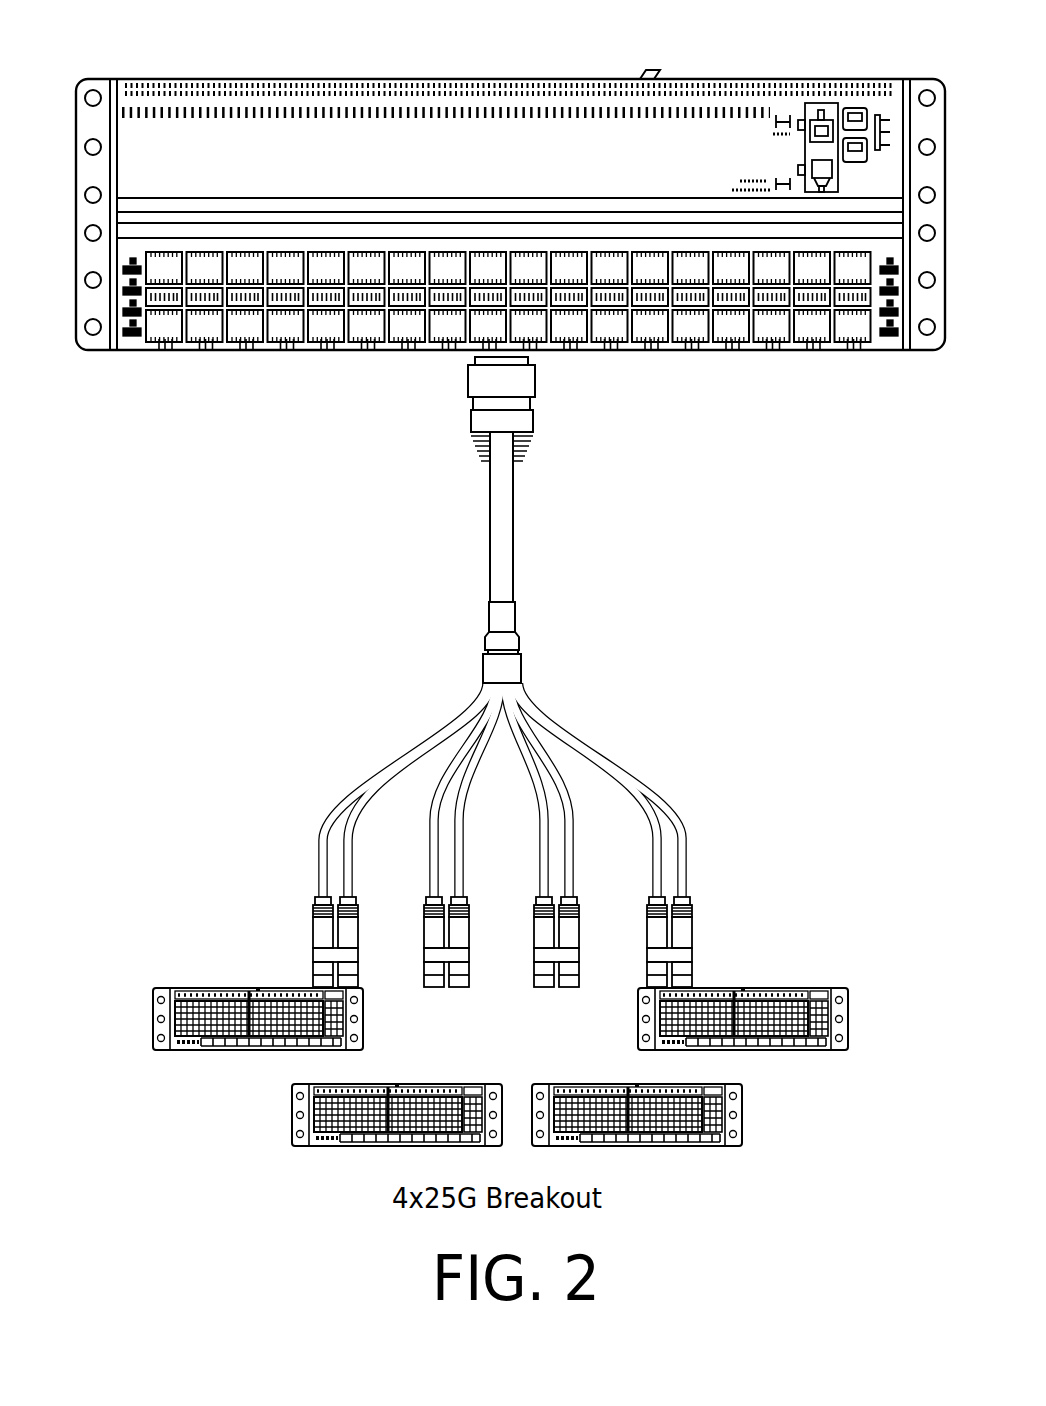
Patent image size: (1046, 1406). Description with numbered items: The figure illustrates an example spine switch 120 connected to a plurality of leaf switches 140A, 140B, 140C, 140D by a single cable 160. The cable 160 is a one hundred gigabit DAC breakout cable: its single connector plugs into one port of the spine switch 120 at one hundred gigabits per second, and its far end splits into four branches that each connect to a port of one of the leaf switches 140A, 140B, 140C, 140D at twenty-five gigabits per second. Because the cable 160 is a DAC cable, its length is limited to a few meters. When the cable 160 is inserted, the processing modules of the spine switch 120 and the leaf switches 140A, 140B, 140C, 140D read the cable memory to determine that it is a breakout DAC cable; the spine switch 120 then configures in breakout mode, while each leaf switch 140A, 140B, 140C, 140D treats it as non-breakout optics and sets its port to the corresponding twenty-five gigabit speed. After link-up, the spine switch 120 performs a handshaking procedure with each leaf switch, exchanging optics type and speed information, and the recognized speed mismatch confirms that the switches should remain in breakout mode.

The spine switch 120 is at (648, 35).
The cable 160 is at (878, 419).
The leaf switch 140A is at (168, 1022).
The leaf switch 140B is at (291, 1113).
The leaf switch 140C is at (738, 1112).
The leaf switch 140D is at (815, 1045).